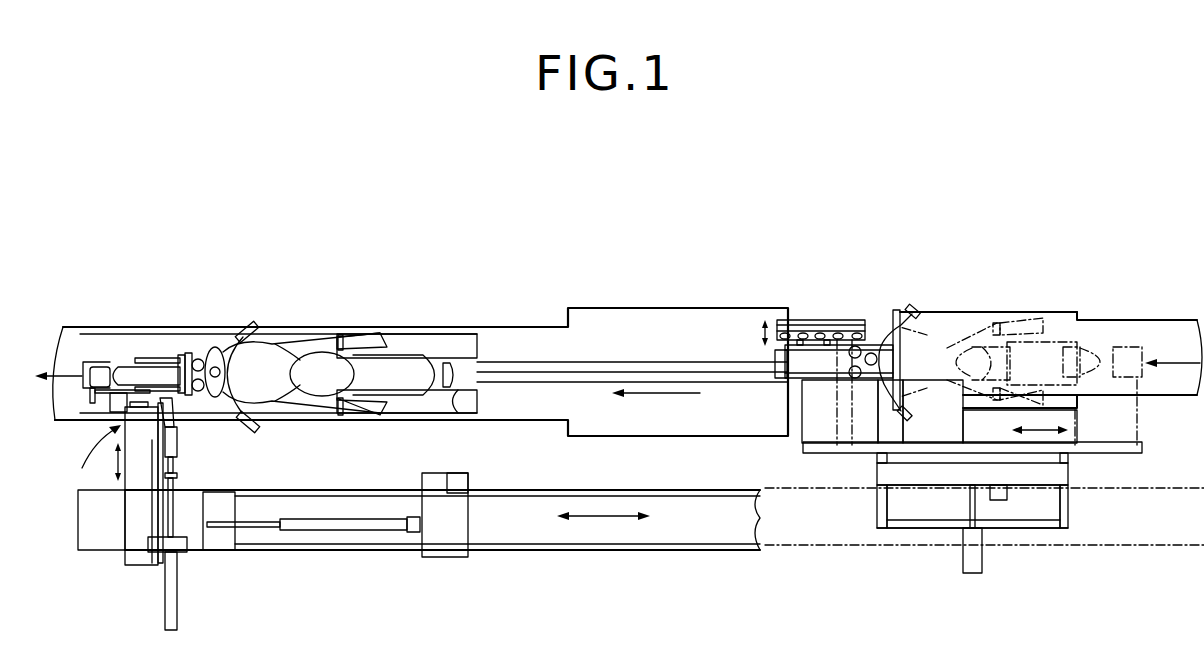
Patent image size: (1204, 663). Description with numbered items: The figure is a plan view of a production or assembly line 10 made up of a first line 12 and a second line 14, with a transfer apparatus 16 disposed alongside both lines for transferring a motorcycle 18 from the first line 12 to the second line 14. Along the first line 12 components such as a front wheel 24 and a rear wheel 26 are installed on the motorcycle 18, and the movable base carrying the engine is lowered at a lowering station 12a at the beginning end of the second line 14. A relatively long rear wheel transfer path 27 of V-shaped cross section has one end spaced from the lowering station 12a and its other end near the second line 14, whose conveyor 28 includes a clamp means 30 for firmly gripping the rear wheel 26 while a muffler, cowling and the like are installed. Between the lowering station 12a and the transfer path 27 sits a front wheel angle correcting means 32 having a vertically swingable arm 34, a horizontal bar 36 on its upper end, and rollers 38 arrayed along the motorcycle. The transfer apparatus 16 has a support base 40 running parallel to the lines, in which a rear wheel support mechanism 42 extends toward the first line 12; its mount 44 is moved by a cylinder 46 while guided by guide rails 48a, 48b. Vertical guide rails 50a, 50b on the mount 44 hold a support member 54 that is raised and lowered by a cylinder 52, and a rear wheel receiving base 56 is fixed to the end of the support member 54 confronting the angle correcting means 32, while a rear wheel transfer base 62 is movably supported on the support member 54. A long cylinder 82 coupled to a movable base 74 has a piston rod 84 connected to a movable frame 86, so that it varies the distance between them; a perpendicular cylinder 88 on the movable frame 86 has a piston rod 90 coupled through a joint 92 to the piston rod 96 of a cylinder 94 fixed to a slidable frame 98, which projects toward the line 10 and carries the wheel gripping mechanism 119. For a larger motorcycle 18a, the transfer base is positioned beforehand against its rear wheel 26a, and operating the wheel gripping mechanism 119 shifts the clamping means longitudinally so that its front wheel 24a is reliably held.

The production or assembly line 10 is at (773, 176).
The first line 12 is at (1083, 295).
The lowering station 12a is at (1055, 316).
The second line 14 is at (494, 322).
The transfer apparatus 16 is at (685, 572).
The motorcycle 18 is at (270, 344).
The motorcycle 18a is at (923, 327).
The front wheel 24 is at (113, 372).
The front wheel 24a is at (781, 370).
The rear wheel 26 is at (445, 366).
The rear wheel 26a is at (1101, 347).
The rear wheel transfer path 27 is at (607, 367).
The conveyor 28 is at (72, 404).
The clamp means 30 is at (455, 393).
The front wheel angle correcting means 32 is at (853, 305).
The arm 34 is at (783, 355).
The horizontal bar 36 is at (805, 320).
The rollers 38 is at (785, 330).
The support base 40 is at (515, 537).
The rear wheel support mechanism 42 is at (1062, 566).
The mount 44 is at (1068, 476).
The cylinder 46 is at (970, 566).
The guide rail 48a is at (1068, 516).
The guide rail 48b is at (877, 524).
The guide rail 50a is at (1063, 472).
The guide rail 50b is at (877, 459).
The cylinder 52 is at (995, 499).
The support member 54 is at (1130, 452).
The rear wheel receiving base 56 is at (827, 430).
The rear wheel transfer base 62 is at (948, 417).
The movable base 74 is at (447, 550).
The cylinder 82 is at (365, 527).
The piston rod 84 is at (260, 528).
The movable frame 86 is at (193, 544).
The cylinder 88 is at (177, 611).
The piston rod 90 is at (172, 518).
The joint 92 is at (177, 478).
The cylinder 94 is at (175, 440).
The piston rod 96 is at (177, 467).
The slidable frame 98 is at (140, 553).
The wheel gripping mechanism 119 is at (89, 459).